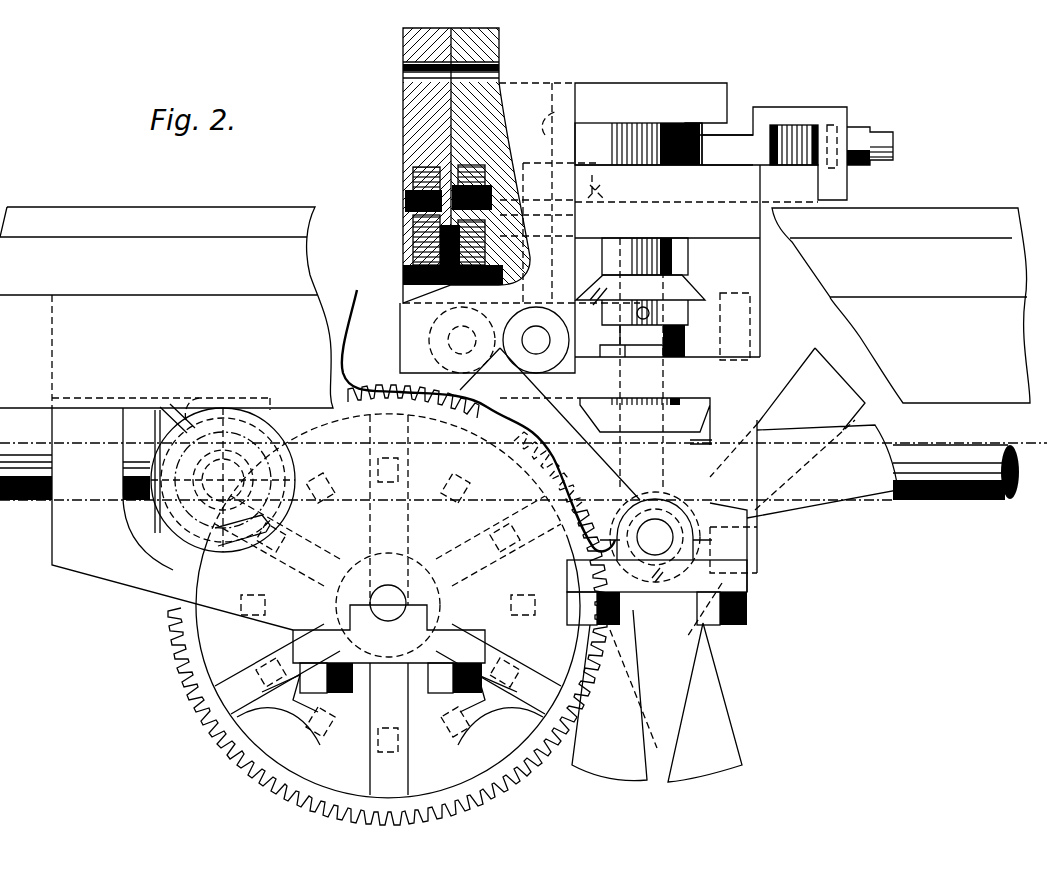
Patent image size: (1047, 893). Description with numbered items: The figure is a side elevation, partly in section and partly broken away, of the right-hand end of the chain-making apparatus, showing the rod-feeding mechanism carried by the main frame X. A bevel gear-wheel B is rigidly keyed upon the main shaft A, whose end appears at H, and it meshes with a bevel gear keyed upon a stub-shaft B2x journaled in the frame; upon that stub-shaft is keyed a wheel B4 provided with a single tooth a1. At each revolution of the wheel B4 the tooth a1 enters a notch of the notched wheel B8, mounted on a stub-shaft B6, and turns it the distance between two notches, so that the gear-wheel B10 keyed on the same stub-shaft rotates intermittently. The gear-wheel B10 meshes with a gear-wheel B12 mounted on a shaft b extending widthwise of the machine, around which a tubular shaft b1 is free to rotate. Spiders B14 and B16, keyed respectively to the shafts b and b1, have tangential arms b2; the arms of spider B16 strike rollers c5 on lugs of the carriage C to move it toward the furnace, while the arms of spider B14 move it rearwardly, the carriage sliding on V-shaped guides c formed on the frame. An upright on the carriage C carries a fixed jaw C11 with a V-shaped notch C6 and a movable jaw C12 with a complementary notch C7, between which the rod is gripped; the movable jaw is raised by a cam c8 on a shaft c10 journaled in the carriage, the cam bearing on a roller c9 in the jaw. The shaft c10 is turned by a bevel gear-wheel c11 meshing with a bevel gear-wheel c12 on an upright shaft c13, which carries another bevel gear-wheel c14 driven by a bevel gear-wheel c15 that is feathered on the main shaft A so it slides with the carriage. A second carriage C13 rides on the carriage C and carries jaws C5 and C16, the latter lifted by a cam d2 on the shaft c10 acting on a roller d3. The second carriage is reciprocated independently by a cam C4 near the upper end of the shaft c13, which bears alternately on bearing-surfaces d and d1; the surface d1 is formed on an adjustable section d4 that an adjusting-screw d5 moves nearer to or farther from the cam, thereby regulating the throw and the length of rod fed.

The main frame X is at (515, 307).
The V-shaped guides c is at (506, 224).
The main shaft A is at (895, 470).
The shaft end H is at (22, 504).
The bevel gear-wheel B is at (156, 506).
The single-tooth wheel B4 is at (176, 528).
The stub-shaft B2x is at (223, 480).
The tooth a1 is at (215, 471).
The gear-wheel B10 is at (196, 715).
The notched wheel B8 is at (388, 605).
The stub-shaft B6 is at (388, 603).
The jaw C5 is at (500, 50).
The fixed jaw C11 is at (404, 42).
The V-shaped notch C6 is at (403, 66).
The V-shaped notch C7 is at (403, 78).
The movable jaw C12 is at (410, 105).
The jaw C16 is at (476, 107).
The roller c9 is at (413, 183).
The cam c8 is at (453, 250).
The shaft c10 is at (412, 228).
The roller d3 is at (472, 187).
The cam d2 is at (462, 242).
The carriage C is at (757, 372).
The second carriage C13 is at (737, 180).
The bearing-surface d is at (558, 105).
The cam C4 is at (602, 248).
The roller c5 is at (462, 340).
The bevel gear-wheel c11 is at (595, 239).
The bearing-surface d1 is at (727, 150).
The adjustable section d4 is at (789, 146).
The adjusting-screw d5 is at (872, 140).
The upright shaft c13 is at (668, 258).
The bevel gear-wheel c12 is at (640, 316).
The bevel gear-wheel c14 is at (645, 421).
The bevel gear-wheel c15 is at (697, 442).
The gear-wheel B12 is at (478, 420).
The tangential arms b2 is at (675, 565).
The spider B16 is at (758, 500).
The shaft b is at (656, 537).
The tubular shaft b1 is at (656, 580).
The spider B14 is at (628, 614).